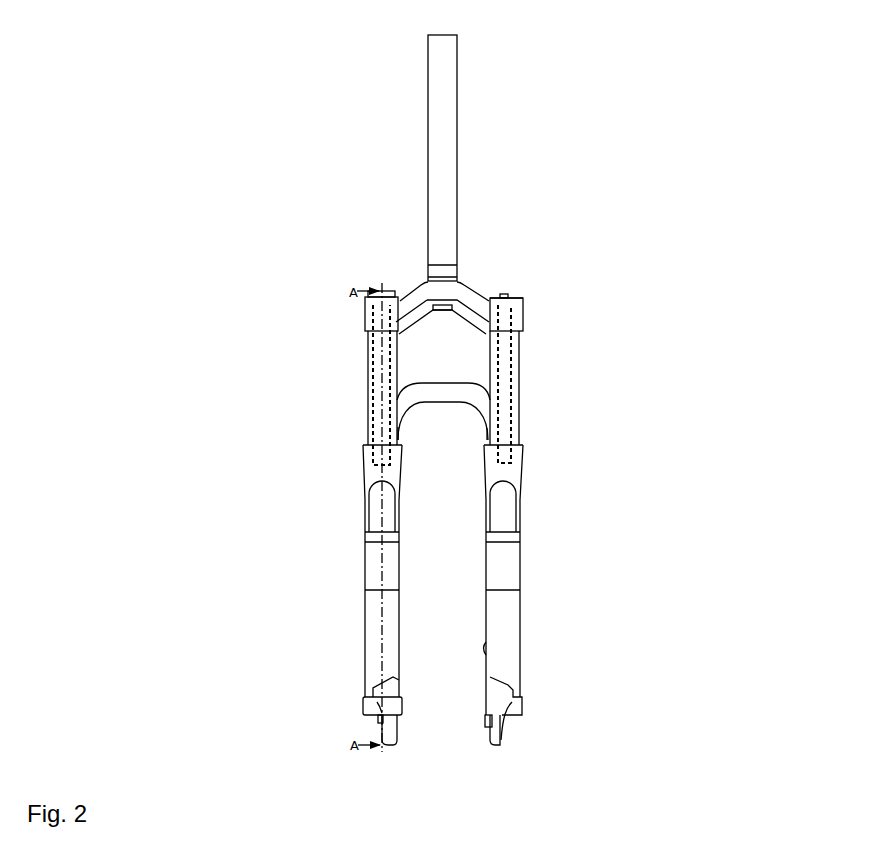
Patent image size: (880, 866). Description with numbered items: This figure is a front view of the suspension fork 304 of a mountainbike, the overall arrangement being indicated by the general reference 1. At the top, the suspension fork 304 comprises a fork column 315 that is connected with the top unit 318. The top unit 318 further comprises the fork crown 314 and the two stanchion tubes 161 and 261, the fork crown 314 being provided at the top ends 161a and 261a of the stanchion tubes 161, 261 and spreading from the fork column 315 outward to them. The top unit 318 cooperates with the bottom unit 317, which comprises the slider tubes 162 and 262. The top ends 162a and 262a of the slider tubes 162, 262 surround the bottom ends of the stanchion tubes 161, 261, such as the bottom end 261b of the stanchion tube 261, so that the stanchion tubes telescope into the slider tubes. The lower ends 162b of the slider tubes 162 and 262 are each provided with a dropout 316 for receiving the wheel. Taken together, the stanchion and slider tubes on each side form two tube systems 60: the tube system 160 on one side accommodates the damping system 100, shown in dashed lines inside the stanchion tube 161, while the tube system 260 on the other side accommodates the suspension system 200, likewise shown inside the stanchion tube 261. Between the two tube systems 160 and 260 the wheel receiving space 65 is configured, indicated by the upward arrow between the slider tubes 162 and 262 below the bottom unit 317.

The bicycle fork 1 is at (388, 163).
The suspension fork 304 is at (515, 87).
The fork column 315 is at (448, 147).
The top unit 318 is at (416, 281).
The fork crown 314 is at (475, 297).
The tube systems 60 is at (594, 232).
The tube system 160 is at (357, 286).
The top end of stanchion tube 161a is at (337, 305).
The stanchion tube 161 is at (368, 347).
The damping system 100 is at (368, 382).
The tube system 260 is at (520, 296).
The top end of stanchion tube 261a is at (548, 306).
The stanchion tube 261 is at (517, 347).
The suspension system 200 is at (510, 382).
The bottom unit 317 is at (455, 392).
The top end of slider tube 162a is at (337, 447).
The slider tube 162 is at (366, 580).
The lower end of slider tube 162b is at (340, 708).
The top end of slider tube 262a is at (548, 447).
The slider tube 262 is at (518, 590).
The bottom end of stanchion tube 261b is at (548, 707).
The dropout 316 is at (498, 740).
The wheel receiving space 65 is at (445, 706).